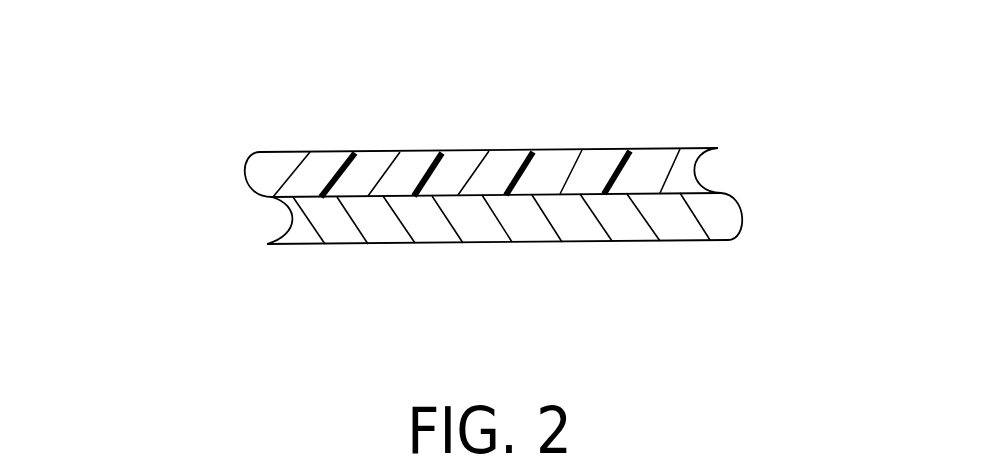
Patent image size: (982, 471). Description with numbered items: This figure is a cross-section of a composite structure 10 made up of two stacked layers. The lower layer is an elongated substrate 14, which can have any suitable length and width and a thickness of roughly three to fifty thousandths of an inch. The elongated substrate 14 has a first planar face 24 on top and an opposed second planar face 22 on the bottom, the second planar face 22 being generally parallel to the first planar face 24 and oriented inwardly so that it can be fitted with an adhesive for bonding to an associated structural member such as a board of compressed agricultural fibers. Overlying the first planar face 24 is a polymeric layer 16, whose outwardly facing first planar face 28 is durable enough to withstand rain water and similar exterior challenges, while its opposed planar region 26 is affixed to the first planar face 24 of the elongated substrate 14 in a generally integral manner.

The composite structure 10 is at (218, 258).
The elongated substrate 14 is at (742, 213).
The polymeric layer 16 is at (702, 148).
The second planar face 22 is at (695, 240).
The first planar face 24 is at (548, 194).
The opposed planar region 26 is at (628, 194).
The first planar face 28 is at (332, 150).